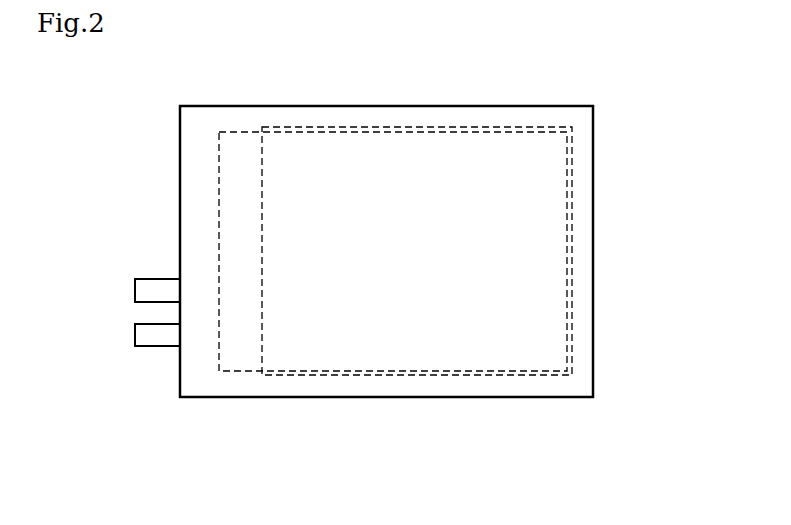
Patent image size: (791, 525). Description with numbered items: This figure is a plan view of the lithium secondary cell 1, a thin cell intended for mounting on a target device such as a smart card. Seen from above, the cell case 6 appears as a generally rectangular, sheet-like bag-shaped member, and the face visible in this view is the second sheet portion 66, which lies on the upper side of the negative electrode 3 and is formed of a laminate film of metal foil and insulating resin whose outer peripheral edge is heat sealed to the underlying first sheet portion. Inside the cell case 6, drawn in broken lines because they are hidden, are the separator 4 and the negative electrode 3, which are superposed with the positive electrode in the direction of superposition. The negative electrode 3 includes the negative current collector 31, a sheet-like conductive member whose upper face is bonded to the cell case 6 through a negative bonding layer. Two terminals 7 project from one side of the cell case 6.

The lithium secondary cell 1 is at (157, 104).
The negative electrode 3 is at (259, 458).
The negative current collector 31 is at (241, 372).
The separator 4 is at (575, 228).
The cell case 6 is at (634, 122).
The second sheet portion 66 is at (587, 153).
The terminal 7 is at (163, 292).